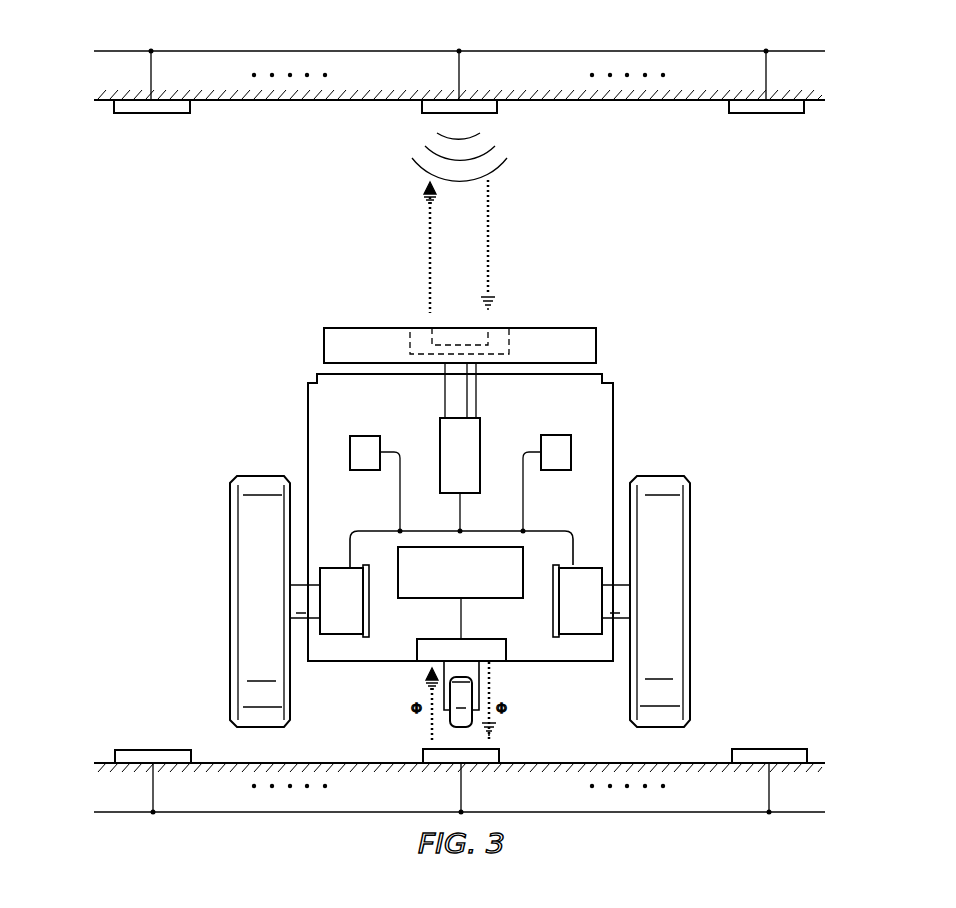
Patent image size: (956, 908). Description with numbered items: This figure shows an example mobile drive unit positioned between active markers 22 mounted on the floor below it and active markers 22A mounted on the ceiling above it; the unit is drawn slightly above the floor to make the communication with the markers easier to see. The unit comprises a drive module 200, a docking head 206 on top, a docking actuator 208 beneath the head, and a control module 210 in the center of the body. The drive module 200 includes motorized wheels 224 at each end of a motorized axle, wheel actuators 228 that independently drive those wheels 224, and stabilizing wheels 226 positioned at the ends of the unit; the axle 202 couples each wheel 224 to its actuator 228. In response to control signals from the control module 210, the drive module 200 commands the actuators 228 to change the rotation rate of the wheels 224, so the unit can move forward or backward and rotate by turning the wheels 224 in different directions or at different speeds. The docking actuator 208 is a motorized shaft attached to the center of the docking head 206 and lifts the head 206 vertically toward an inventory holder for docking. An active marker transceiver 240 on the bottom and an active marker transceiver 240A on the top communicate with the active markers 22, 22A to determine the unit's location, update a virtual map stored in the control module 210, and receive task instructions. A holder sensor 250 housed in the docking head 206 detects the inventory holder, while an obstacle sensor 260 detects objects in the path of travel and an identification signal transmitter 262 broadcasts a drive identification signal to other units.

The active marker 22 is at (140, 750).
The active marker 22A is at (142, 115).
The drive module 200 is at (258, 421).
The wheel axle 202 is at (300, 583).
The docking head 206 is at (565, 328).
The docking actuator 208 is at (440, 436).
The control module 210 is at (475, 584).
The motorized wheel 224 is at (230, 614).
The stabilizing wheel 226 is at (463, 690).
The wheel actuator 228 is at (340, 638).
The active marker transceiver 240 is at (488, 639).
The active marker transceiver 240A is at (510, 342).
The holder sensor 250 is at (432, 338).
The obstacle sensor 260 is at (360, 470).
The identification signal transmitter 262 is at (558, 470).